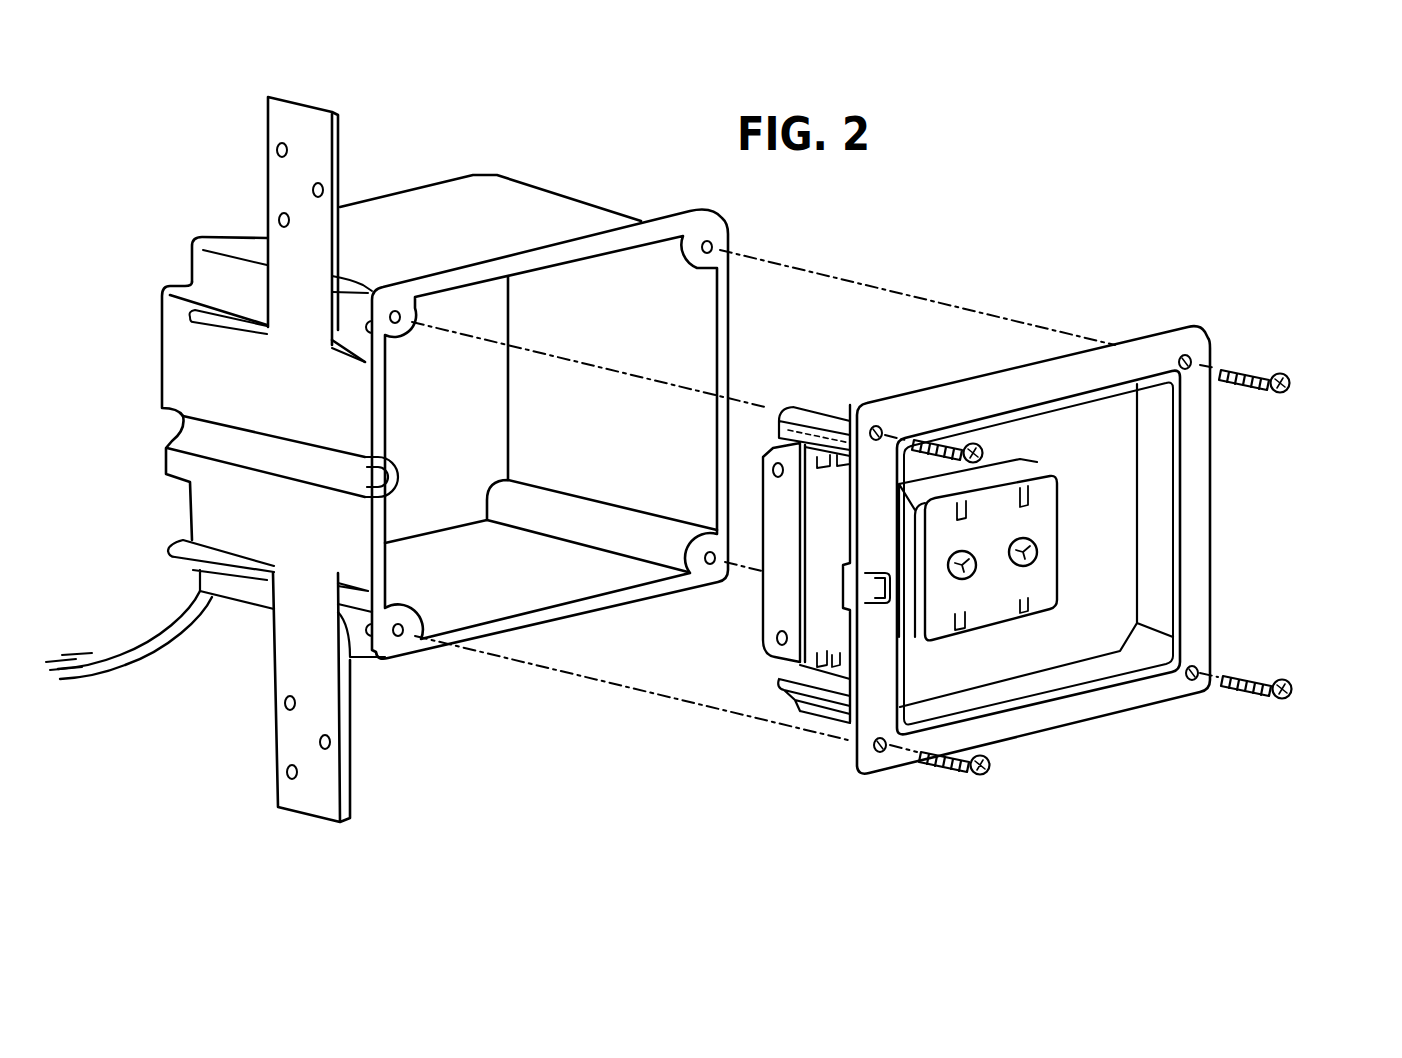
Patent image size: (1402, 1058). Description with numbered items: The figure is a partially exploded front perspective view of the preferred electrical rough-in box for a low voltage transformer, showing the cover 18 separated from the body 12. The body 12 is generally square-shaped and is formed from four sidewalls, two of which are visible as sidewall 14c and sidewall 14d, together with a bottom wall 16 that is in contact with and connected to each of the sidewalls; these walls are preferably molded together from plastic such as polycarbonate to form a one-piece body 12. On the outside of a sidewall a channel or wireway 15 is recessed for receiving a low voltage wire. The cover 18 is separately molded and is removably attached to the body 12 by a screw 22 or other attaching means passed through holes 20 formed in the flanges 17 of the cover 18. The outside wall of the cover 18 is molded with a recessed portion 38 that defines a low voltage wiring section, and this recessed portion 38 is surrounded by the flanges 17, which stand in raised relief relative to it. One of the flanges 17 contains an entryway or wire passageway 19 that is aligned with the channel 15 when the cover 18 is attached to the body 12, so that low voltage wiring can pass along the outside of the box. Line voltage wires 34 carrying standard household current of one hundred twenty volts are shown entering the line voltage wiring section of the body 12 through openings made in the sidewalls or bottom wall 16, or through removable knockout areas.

The body 12 is at (530, 372).
The sidewall 14c is at (628, 438).
The sidewall 14d is at (512, 596).
The channel or wireway 15 is at (200, 442).
The bottom wall 16 is at (459, 445).
The flanges 17 is at (957, 393).
The cover 18 is at (1044, 558).
The wire passageway 19 is at (866, 600).
The holes 20 is at (714, 246).
The screw 22 is at (1290, 389).
The line voltage wires 34 is at (128, 655).
The recessed portion 38 is at (1118, 517).